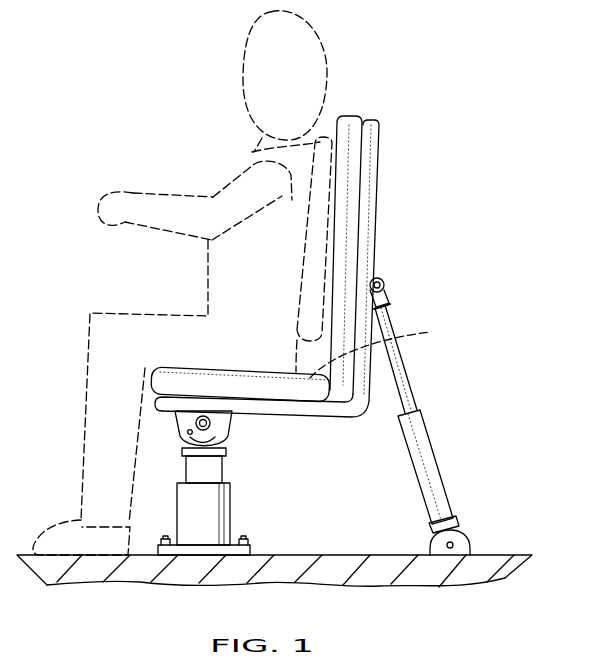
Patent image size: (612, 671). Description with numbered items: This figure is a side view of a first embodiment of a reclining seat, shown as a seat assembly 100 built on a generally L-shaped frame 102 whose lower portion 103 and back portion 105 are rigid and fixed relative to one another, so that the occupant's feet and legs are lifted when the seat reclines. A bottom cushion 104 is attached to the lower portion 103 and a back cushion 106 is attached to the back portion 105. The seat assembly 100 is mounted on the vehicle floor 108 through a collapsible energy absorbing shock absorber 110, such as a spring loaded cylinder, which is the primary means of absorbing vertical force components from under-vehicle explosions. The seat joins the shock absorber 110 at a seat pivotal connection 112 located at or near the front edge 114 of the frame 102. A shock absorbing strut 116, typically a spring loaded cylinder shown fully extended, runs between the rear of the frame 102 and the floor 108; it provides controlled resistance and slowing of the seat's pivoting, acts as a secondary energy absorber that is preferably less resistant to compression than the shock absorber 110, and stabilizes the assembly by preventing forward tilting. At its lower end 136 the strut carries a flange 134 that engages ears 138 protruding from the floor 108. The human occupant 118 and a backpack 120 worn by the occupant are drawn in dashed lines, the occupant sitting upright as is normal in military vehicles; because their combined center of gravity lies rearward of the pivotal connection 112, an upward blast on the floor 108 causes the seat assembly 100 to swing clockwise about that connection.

The seat assembly 100 is at (443, 133).
The frame 102 is at (378, 178).
The lower portion 103 is at (278, 416).
The bottom cushion 104 is at (357, 338).
The back portion 105 is at (378, 212).
The back cushion 106 is at (353, 117).
The vehicle floor 108 is at (392, 553).
The shock absorber 110 is at (230, 508).
The seat pivotal connection 112 is at (232, 424).
The front edge 114 is at (224, 283).
The shock absorbing strut 116 is at (461, 416).
The human occupant 118 is at (314, 46).
The backpack 120 is at (332, 136).
The flange 134 is at (457, 527).
The lower end 136 is at (448, 508).
The ears 138 is at (465, 537).